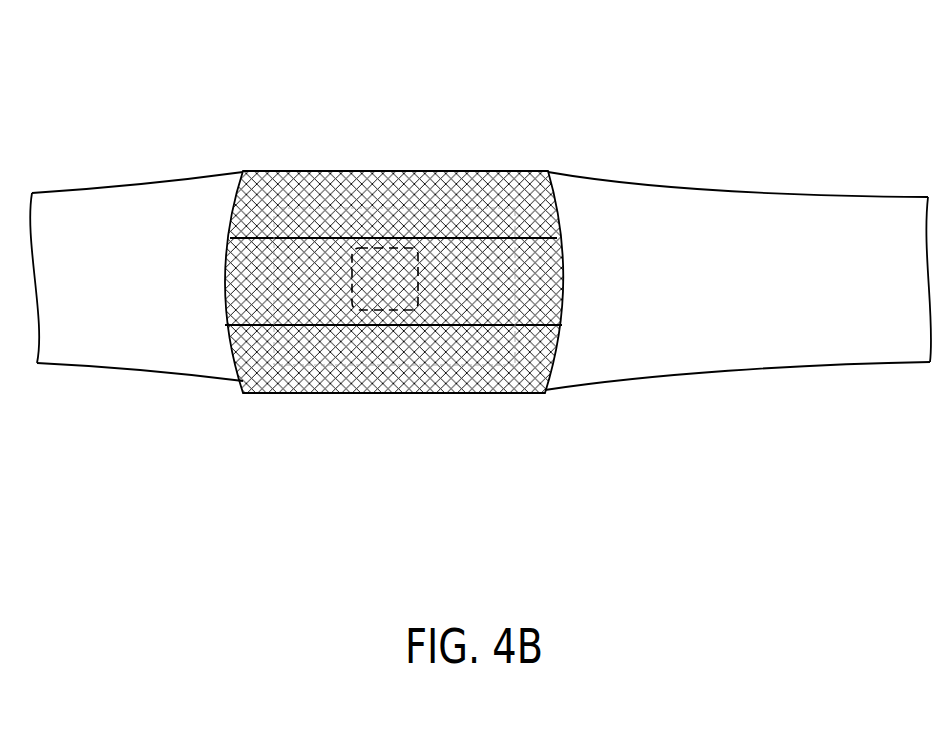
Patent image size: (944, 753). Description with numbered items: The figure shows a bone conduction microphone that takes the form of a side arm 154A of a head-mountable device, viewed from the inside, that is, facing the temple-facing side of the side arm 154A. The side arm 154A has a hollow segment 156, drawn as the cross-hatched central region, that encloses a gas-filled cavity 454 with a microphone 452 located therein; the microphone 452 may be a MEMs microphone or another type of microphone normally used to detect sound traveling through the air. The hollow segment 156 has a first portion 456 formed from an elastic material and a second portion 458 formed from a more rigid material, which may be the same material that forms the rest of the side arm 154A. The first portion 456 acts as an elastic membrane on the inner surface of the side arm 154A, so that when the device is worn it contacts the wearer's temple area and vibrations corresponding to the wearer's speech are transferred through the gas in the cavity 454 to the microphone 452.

The side arm 154A is at (541, 196).
The hollow segment 156 is at (237, 457).
The second portion 458 is at (369, 198).
The first portion 456 is at (488, 282).
The gas-filled cavity 454 is at (280, 320).
The microphone 452 is at (388, 305).